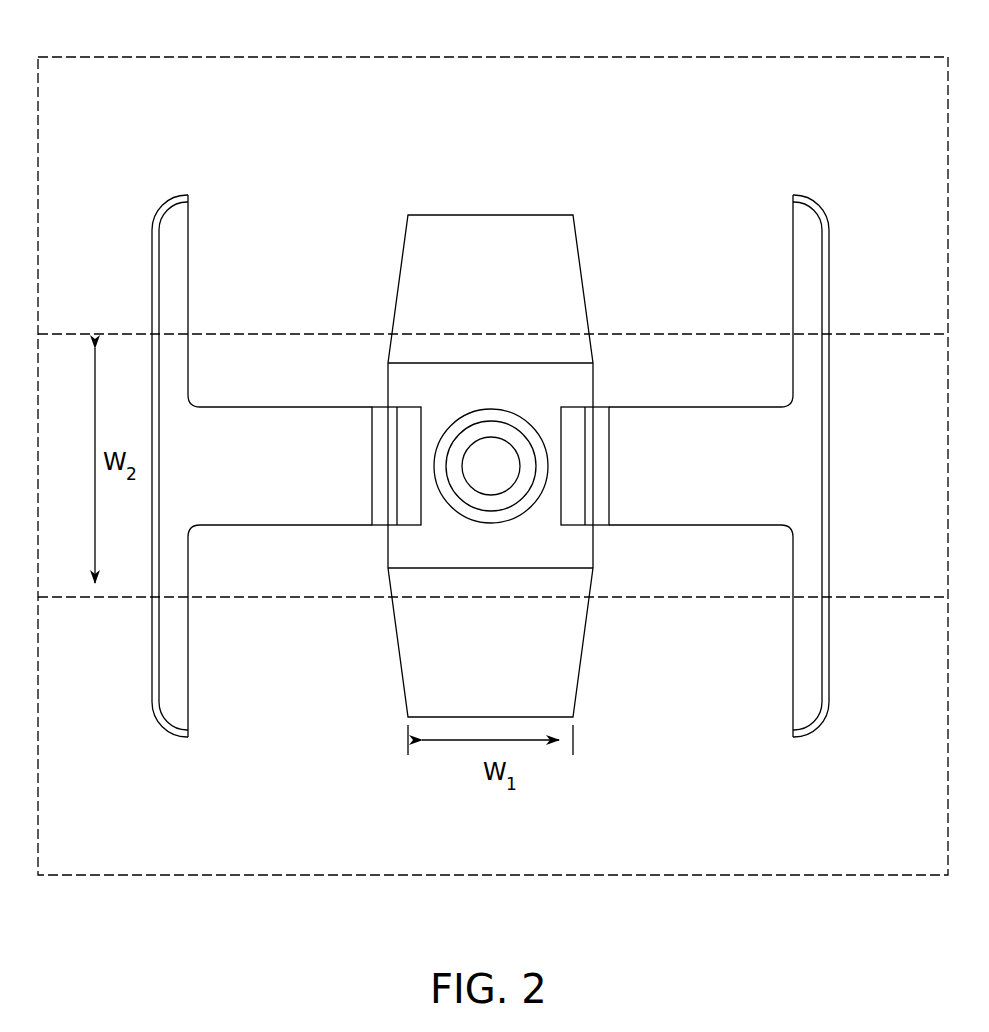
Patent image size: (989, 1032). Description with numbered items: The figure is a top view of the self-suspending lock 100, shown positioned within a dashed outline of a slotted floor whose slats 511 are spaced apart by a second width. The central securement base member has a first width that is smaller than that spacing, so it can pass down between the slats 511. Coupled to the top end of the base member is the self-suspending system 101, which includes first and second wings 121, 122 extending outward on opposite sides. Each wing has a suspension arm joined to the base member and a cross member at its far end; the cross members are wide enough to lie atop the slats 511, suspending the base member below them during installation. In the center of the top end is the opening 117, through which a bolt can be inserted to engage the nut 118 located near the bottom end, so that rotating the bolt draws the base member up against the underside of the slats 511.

The slats 511 is at (757, 86).
The self-suspending lock 100 is at (490, 448).
The self-suspending system 101 is at (336, 272).
The first wing 121 is at (283, 408).
The second wing 122 is at (682, 408).
The opening 117 is at (490, 497).
The nut 118 is at (499, 468).